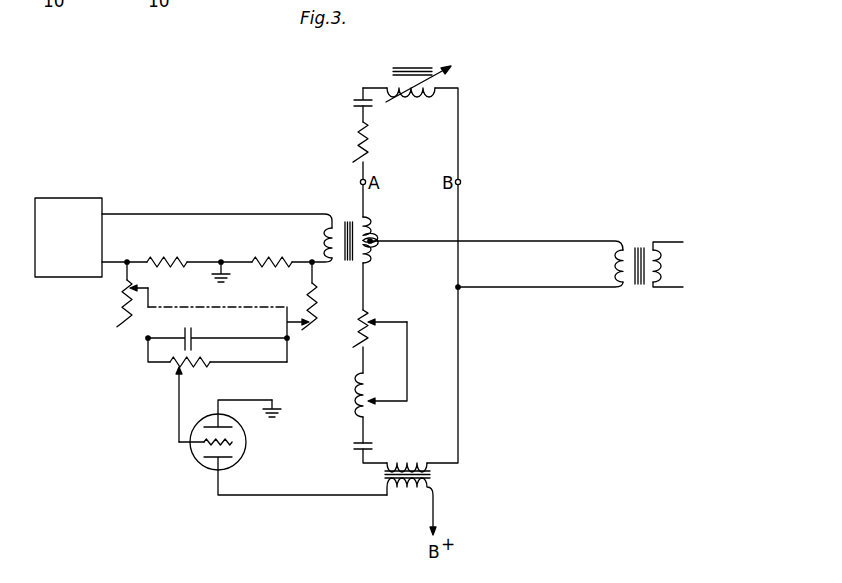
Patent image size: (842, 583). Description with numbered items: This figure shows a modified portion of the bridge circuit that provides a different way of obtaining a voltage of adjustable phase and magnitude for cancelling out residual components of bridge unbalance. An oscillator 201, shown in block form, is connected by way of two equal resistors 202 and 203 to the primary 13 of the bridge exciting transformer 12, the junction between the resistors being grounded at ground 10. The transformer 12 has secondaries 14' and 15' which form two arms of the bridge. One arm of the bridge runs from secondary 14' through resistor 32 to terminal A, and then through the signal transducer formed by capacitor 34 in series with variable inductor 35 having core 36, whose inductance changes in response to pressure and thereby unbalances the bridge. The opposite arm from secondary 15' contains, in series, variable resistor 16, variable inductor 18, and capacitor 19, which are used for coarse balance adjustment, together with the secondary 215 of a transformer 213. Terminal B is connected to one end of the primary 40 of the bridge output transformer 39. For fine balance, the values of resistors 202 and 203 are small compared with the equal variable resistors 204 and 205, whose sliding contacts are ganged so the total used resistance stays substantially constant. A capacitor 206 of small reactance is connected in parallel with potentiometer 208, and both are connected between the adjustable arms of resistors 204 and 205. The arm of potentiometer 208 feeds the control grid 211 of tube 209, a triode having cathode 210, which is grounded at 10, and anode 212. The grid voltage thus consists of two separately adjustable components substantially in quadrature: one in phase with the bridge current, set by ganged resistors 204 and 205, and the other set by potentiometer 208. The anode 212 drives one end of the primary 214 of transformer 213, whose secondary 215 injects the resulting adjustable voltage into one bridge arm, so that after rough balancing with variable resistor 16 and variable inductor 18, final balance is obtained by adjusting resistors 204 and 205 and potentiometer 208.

The oscillator 201 is at (81, 247).
The resistor 202 is at (172, 257).
The resistor 203 is at (262, 257).
The ground 10 is at (233, 279).
The variable resistor 204 is at (124, 318).
The variable resistor 205 is at (327, 306).
The capacitor 206 is at (194, 340).
The potentiometer 208 is at (198, 368).
The tube 209 is at (198, 462).
The cathode 210 is at (216, 420).
The control grid 211 is at (238, 450).
The anode 212 is at (226, 460).
The bridge exciting transformer 12 is at (343, 214).
The primary 13 is at (326, 246).
The secondary 14' is at (383, 227).
The secondary 15' is at (383, 256).
The resistor 32 is at (357, 138).
The capacitor 34 is at (355, 104).
The variable inductor 35 is at (387, 82).
The core 36 is at (420, 66).
The variable resistor 16 is at (358, 336).
The variable inductor 18 is at (366, 378).
The capacitor 19 is at (350, 452).
The secondary 215 is at (404, 455).
The transformer 213 is at (438, 476).
The primary 214 is at (411, 500).
The bridge output transformer 39 is at (642, 242).
The primary 40 is at (615, 267).